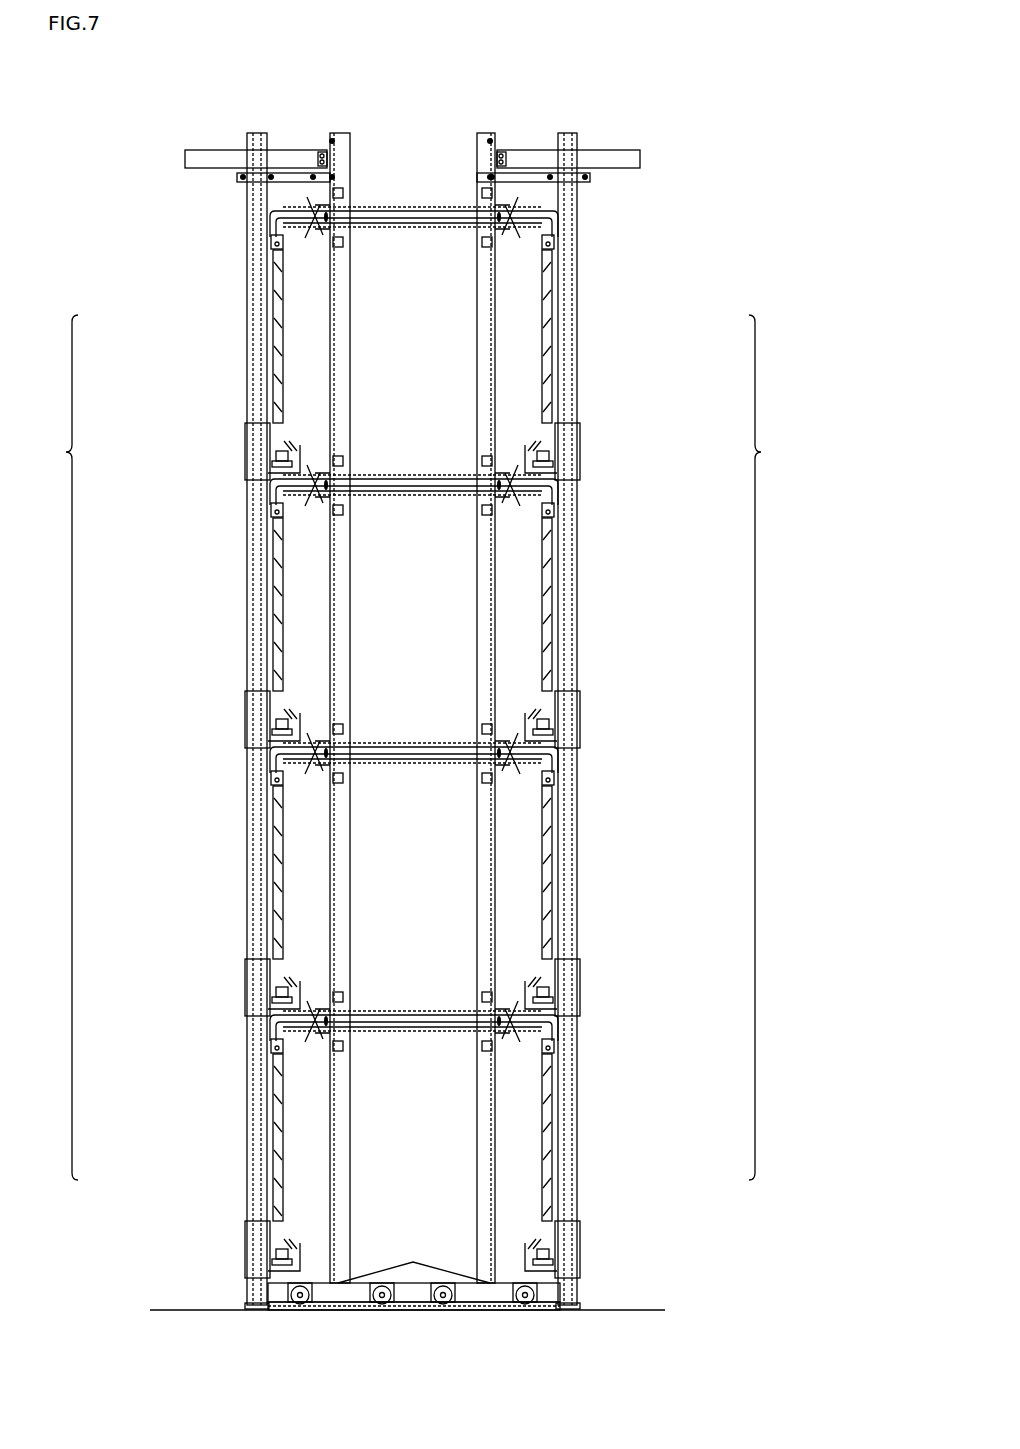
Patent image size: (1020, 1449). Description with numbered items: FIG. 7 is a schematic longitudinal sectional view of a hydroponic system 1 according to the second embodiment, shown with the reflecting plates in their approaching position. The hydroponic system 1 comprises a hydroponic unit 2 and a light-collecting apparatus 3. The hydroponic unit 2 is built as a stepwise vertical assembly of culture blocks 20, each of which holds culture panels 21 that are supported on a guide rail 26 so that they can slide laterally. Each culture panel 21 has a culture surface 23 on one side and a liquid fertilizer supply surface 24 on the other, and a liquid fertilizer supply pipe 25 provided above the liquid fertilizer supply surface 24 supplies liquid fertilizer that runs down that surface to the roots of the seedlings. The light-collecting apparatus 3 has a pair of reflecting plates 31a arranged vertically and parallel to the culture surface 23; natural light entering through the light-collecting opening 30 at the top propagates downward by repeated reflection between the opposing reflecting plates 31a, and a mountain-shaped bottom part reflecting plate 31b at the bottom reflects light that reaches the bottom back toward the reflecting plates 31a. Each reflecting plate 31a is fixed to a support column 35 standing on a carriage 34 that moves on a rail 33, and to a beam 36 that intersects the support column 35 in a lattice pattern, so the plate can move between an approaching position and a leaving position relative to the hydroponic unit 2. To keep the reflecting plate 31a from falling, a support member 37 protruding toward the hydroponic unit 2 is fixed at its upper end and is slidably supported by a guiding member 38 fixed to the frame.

The hydroponic system 1 is at (630, 110).
The hydroponic unit 2 is at (413, 747).
The light-collecting apparatus 3 is at (437, 128).
The culture block 20 is at (270, 355).
The culture panel 21 is at (270, 560).
The culture surface 23 is at (285, 540).
The liquid fertilizer supply surface 24 is at (277, 595).
The liquid fertilizer supply pipe 25 is at (275, 238).
The guide rail 26 is at (285, 1000).
The light-collecting opening 30 is at (396, 150).
The reflecting plate 31a is at (330, 298).
The bottom part reflecting plate 31b is at (380, 1262).
The rail 33 is at (412, 1306).
The carriage 34 is at (340, 1296).
The support column 35 is at (340, 690).
The beam 36 is at (335, 780).
The support member 37 is at (215, 158).
The guiding member 38 is at (322, 178).